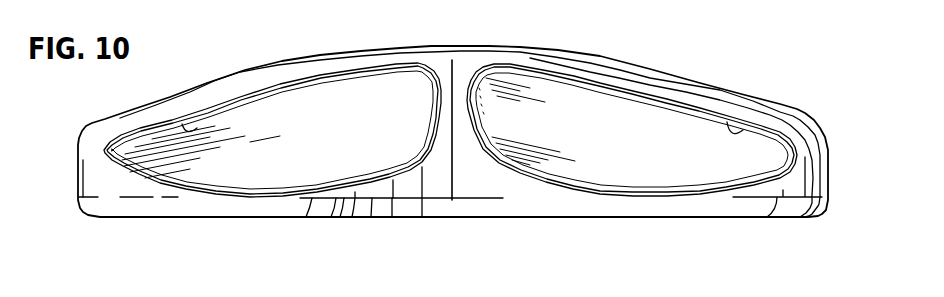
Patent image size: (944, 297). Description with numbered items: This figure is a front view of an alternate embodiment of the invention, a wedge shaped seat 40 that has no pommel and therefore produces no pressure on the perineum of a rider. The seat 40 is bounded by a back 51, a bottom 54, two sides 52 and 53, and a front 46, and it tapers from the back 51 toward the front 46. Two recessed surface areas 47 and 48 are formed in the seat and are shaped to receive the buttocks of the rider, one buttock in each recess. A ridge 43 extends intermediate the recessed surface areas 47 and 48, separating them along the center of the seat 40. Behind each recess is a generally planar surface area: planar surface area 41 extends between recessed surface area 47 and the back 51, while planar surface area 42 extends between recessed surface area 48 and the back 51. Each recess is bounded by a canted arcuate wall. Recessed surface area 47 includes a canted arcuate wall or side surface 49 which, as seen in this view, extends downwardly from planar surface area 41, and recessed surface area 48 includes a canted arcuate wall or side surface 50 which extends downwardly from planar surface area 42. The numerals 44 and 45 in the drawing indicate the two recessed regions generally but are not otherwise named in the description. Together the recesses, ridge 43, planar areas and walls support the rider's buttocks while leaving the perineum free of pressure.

The wedge shaped seat 40 is at (90, 122).
The generally planar surface area 41 is at (270, 83).
The generally planar surface area 42 is at (700, 100).
The ridge 43 is at (452, 172).
The first cavity 44 is at (395, 97).
The second cavity 45 is at (567, 110).
The front 46 is at (477, 190).
The recessed surface area 47 is at (343, 128).
The recessed surface area 48 is at (633, 137).
The canted arcuate wall 49 is at (193, 130).
The canted arcuate wall 50 is at (747, 133).
The back 51 is at (482, 45).
The side 52 is at (77, 175).
The side 53 is at (826, 150).
The bottom 54 is at (408, 217).